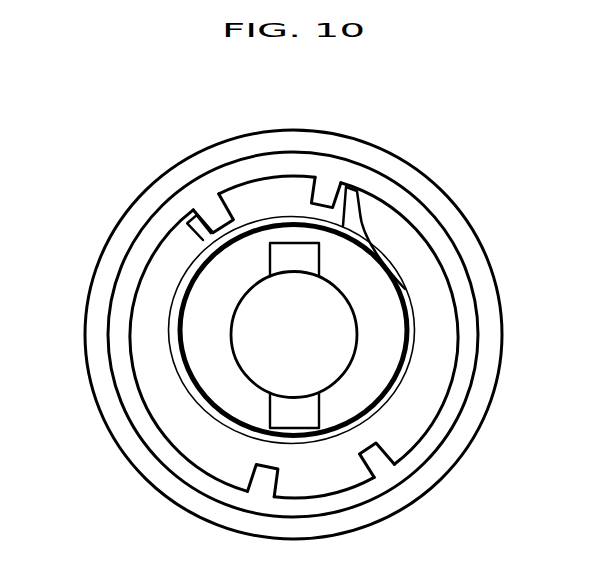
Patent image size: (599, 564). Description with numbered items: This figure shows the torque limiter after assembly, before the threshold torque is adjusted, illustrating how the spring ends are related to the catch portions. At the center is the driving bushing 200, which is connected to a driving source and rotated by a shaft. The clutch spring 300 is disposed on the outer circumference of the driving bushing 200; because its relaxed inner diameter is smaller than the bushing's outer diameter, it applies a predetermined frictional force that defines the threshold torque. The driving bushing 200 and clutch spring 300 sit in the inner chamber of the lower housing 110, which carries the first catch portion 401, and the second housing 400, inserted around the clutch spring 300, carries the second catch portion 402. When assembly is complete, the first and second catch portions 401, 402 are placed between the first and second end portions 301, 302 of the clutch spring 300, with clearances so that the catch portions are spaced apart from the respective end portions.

The lower housing 110 is at (497, 302).
The driving bushing 200 is at (390, 334).
The clutch spring 300 is at (299, 308).
The first end portion 301 is at (197, 232).
The second end portion 302 is at (352, 196).
The second housing 400 is at (293, 301).
The first catch portion 401 is at (213, 210).
The second catch portion 402 is at (323, 197).